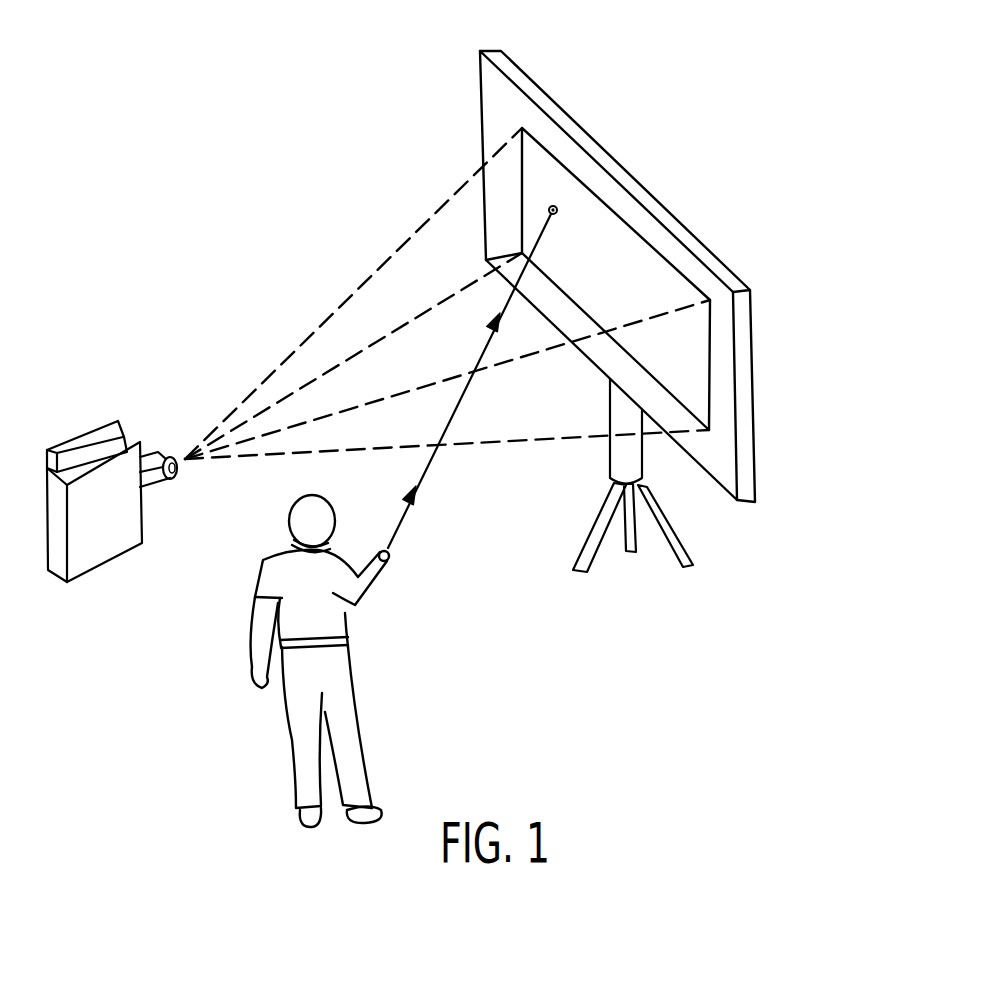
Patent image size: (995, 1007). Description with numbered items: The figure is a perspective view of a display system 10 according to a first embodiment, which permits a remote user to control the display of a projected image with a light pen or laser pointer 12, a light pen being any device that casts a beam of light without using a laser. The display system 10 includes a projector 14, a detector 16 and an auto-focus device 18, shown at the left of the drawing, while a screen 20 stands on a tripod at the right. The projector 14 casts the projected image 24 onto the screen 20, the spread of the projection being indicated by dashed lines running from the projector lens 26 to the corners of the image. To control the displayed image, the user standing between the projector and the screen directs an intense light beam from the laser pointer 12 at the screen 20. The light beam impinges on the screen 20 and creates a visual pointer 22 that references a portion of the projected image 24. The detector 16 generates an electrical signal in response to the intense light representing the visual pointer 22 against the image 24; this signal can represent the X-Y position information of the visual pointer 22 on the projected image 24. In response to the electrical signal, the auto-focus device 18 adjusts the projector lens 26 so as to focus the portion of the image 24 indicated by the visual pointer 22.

The display system 10 is at (265, 107).
The laser pointer 12 is at (390, 549).
The projector 14 is at (102, 563).
The detector 16 is at (80, 437).
The auto-focus device 18 is at (152, 437).
The screen 20 is at (613, 155).
The visual pointer 22 is at (557, 209).
The projected image 24 is at (710, 353).
The projector lens 26 is at (178, 482).